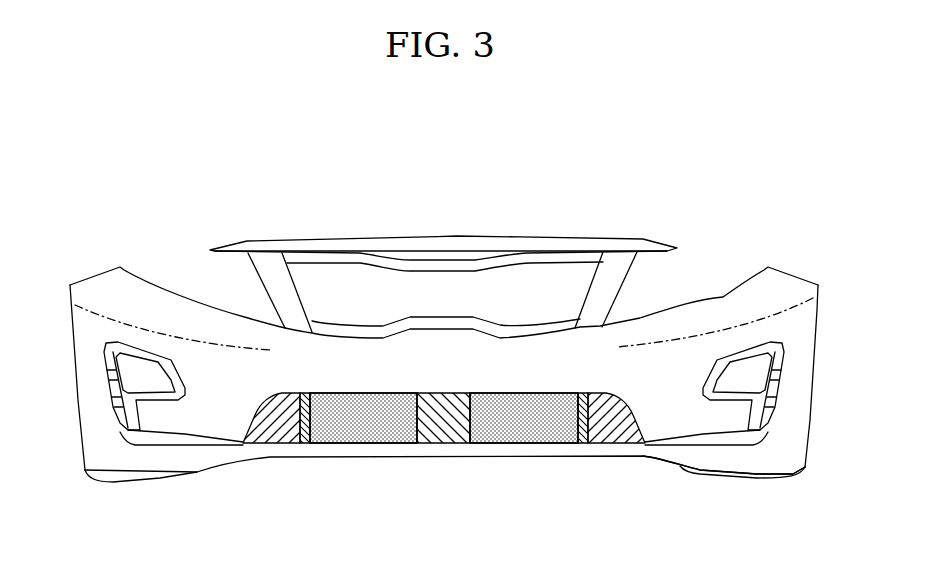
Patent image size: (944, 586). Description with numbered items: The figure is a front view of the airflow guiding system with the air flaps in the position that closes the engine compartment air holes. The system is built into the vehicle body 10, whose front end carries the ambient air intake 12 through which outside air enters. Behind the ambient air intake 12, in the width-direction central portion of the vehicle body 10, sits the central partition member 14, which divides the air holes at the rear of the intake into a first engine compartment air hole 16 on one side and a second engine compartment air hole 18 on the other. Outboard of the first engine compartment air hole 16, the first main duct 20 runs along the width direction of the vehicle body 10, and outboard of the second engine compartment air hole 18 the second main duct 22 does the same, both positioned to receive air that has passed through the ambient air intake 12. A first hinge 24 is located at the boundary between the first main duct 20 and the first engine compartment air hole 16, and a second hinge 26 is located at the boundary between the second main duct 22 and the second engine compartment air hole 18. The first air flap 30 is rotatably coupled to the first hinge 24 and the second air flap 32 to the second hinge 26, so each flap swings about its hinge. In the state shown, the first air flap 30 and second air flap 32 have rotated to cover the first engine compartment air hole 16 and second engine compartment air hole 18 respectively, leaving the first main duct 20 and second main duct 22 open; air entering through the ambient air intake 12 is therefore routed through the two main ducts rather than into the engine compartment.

The vehicle body 10 is at (683, 362).
The ambient air intake 12 is at (645, 443).
The central partition member 14 is at (450, 443).
The first engine compartment air hole 16 is at (368, 398).
The second engine compartment air hole 18 is at (520, 395).
The first main duct 20 is at (270, 443).
The second main duct 22 is at (613, 443).
The first hinge 24 is at (304, 443).
The second hinge 26 is at (583, 443).
The first air flap 30 is at (365, 443).
The second air flap 32 is at (530, 443).